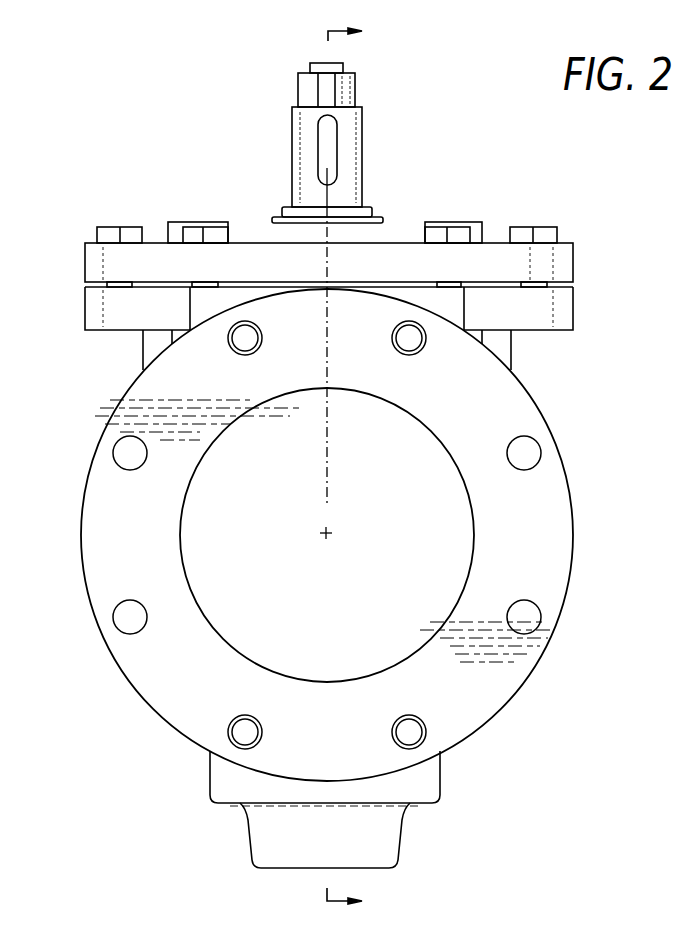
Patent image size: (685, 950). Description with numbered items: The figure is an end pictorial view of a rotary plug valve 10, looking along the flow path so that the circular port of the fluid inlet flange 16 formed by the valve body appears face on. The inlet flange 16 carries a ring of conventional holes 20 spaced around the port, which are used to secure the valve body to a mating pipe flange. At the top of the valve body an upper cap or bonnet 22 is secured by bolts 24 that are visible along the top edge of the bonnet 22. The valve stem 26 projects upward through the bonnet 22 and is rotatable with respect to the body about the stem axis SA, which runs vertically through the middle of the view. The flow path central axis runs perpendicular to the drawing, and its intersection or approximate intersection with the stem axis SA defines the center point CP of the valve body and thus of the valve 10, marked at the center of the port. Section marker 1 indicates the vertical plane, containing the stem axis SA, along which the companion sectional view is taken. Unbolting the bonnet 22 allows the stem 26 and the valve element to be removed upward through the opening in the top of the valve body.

The rotary plug valve 10 is at (351, 465).
The fluid inlet flange 16 is at (495, 715).
The holes 20 is at (527, 443).
The upper cap or bonnet 22 is at (560, 262).
The bolts 24 is at (203, 222).
The valve stem 26 is at (356, 152).
The stem axis SA is at (328, 485).
The center point CP is at (328, 537).
The section line 1- 1 is at (353, 466).